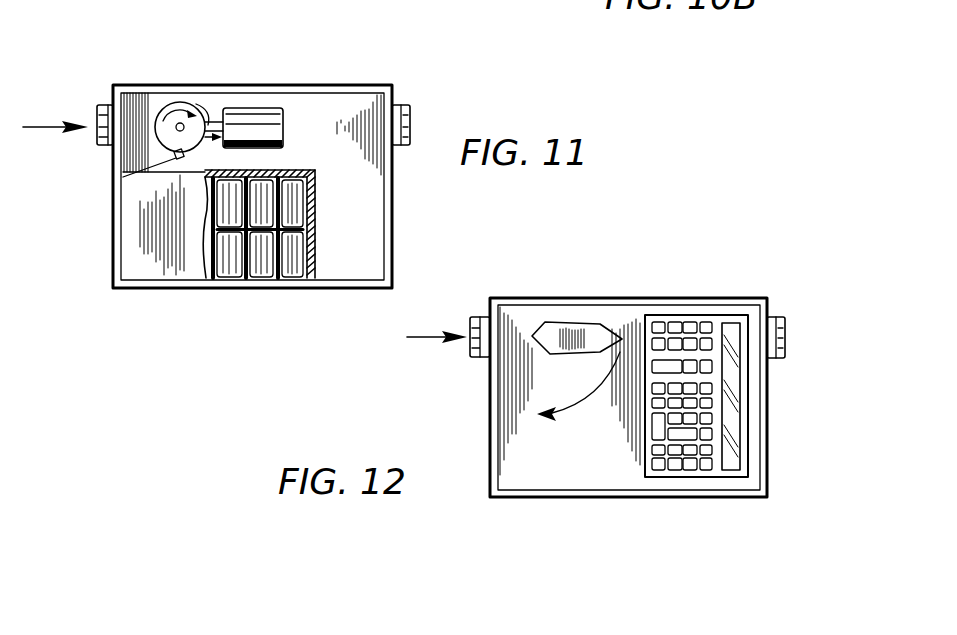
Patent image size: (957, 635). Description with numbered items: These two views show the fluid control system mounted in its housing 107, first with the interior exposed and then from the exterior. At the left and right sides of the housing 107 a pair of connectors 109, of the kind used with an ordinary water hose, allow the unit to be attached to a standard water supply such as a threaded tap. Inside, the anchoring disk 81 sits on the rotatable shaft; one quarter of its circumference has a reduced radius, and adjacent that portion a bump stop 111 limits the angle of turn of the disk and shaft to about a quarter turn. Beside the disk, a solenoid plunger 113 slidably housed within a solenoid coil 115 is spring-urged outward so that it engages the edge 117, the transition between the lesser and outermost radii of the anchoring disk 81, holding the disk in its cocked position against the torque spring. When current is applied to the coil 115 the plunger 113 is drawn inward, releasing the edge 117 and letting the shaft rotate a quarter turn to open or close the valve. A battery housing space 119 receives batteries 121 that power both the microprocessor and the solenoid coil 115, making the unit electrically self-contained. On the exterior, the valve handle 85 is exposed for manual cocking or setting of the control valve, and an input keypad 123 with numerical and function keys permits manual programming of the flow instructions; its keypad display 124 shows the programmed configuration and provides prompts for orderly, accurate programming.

In FIG. 11, the anchoring disk 81 is at (160, 103).
In FIG. 12, the valve handle 85 is at (586, 334).
In FIG. 11, the housing 107 is at (245, 288).
In FIG. 11, the connectors 109 is at (104, 104).
In FIG. 12, the connectors 109 is at (480, 360).
In FIG. 11, the bump stop 111 is at (118, 177).
In FIG. 11, the solenoid plunger 113 is at (213, 121).
In FIG. 11, the solenoid coil 115 is at (260, 108).
In FIG. 11, the edge 117 is at (199, 103).
In FIG. 11, the battery housing space 119 is at (137, 238).
In FIG. 11, the batteries 121 is at (335, 211).
In FIG. 12, the input keypad 123 is at (686, 320).
In FIG. 12, the keypad display 124 is at (730, 392).